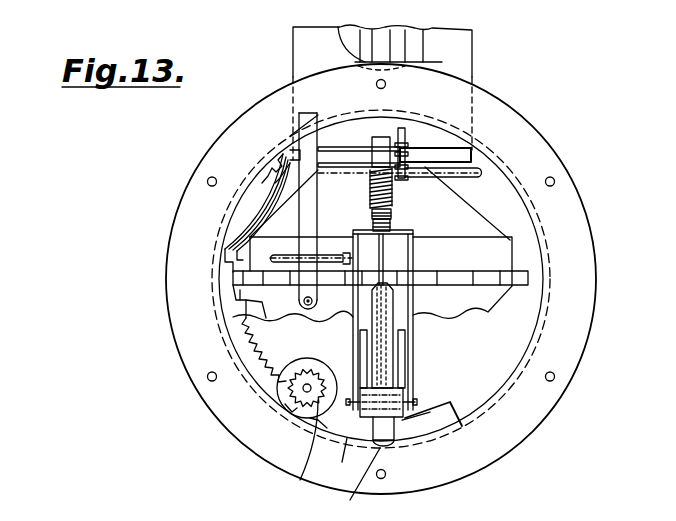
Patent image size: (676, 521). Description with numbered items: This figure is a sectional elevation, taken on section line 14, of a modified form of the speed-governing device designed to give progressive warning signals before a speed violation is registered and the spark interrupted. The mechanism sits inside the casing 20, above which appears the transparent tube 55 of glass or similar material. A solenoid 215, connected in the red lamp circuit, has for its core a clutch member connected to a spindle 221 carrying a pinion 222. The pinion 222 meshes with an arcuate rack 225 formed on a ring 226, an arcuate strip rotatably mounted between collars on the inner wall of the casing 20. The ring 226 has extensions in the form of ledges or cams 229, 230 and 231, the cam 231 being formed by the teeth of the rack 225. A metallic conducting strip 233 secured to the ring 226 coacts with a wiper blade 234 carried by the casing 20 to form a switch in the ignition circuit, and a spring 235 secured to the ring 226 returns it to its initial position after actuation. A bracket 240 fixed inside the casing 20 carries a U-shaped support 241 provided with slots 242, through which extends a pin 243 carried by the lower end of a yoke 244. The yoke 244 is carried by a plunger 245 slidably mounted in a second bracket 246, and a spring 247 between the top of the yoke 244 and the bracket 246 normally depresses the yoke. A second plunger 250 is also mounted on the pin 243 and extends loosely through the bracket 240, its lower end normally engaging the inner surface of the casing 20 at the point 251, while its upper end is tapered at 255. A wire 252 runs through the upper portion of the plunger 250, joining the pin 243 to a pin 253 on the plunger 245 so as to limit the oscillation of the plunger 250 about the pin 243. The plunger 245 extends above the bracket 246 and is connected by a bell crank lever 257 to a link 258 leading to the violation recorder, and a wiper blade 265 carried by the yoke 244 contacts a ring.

The section line 14 is at (383, 5).
The casing 20 is at (552, 268).
The tube 55 is at (405, 48).
The solenoid 215 is at (297, 362).
The spindle 221 is at (309, 386).
The pinion 222 is at (318, 422).
The arcuate rack 225 is at (267, 372).
The ring 226 is at (238, 306).
The cam 229 is at (336, 459).
The cam 230 is at (290, 447).
The cam 231 is at (281, 416).
The metallic conducting strip 233 is at (246, 224).
The wiper blade 234 is at (260, 184).
The spring 235 is at (268, 327).
The bracket 240 is at (442, 403).
The U-shaped support 241 is at (410, 368).
The slots 242 is at (413, 356).
The pin 243 is at (405, 400).
The yoke 244 is at (416, 255).
The plunger 245 is at (390, 195).
The bracket 246 is at (372, 164).
The spring 247 is at (393, 219).
The plunger 250 is at (392, 427).
The engagement point 251 is at (352, 483).
The wire 252 is at (386, 247).
The pin 253 is at (385, 218).
The tapered end 255 is at (394, 300).
The bell crank lever 257 is at (405, 143).
The link 258 is at (473, 171).
The wiper blade 265 is at (327, 258).